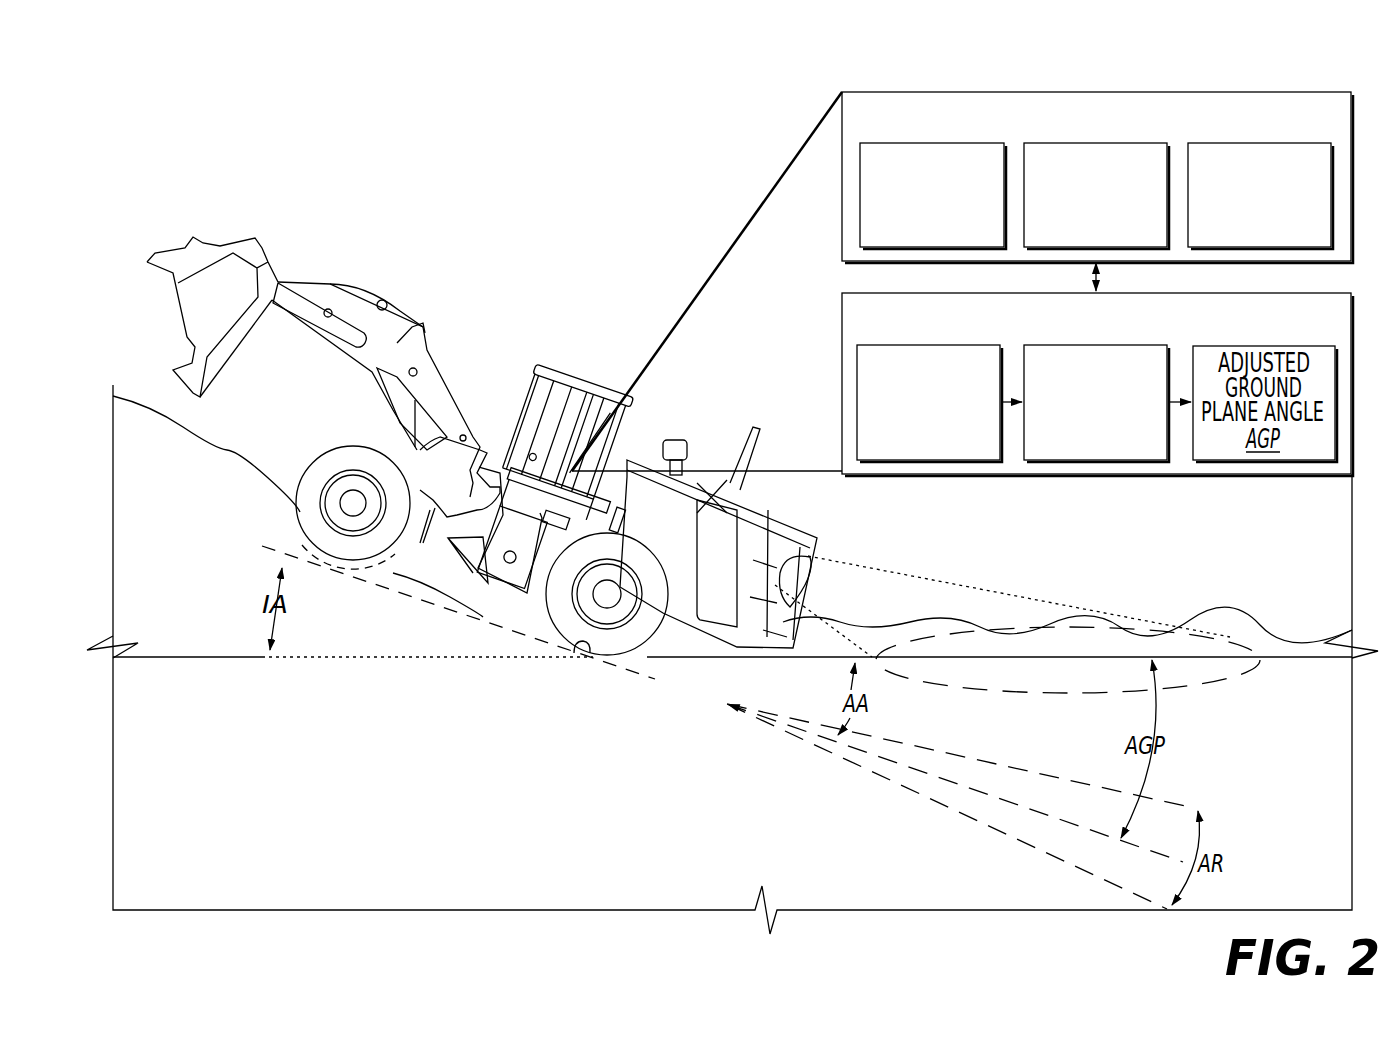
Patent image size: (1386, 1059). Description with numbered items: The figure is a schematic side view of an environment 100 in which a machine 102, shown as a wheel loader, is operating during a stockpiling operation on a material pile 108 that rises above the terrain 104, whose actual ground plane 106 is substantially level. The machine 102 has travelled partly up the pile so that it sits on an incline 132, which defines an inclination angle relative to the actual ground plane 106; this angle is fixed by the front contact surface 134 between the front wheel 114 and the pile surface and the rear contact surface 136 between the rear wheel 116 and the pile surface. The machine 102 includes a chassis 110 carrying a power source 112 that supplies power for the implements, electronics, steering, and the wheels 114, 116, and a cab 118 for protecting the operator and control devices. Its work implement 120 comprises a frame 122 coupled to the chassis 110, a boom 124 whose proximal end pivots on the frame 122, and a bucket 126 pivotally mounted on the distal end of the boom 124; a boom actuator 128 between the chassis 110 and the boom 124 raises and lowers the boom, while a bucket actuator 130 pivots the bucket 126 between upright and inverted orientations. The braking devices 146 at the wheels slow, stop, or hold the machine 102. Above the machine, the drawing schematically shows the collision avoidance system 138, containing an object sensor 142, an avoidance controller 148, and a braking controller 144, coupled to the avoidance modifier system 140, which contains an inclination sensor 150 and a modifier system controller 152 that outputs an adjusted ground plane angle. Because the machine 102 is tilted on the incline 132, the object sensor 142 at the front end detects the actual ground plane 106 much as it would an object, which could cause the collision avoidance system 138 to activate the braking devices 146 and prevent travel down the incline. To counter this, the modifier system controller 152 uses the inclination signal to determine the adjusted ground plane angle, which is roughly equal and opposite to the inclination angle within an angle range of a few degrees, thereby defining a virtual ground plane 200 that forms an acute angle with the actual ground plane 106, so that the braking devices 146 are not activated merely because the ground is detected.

The environment 100 is at (176, 140).
The machine 102 is at (597, 360).
The terrain 104 is at (1283, 638).
The actual ground plane 106 is at (1082, 625).
The material pile 108 is at (219, 523).
The chassis 110 is at (482, 600).
The power source 112 is at (713, 535).
The front wheel 114 is at (353, 450).
The rear wheel 116 is at (647, 623).
The cab 118 is at (640, 418).
The work implement 120 is at (357, 273).
The frame 122 is at (487, 495).
The boom 124 is at (397, 342).
The bucket 126 is at (206, 243).
The boom actuator 128 is at (377, 392).
The bucket actuator 130 is at (400, 290).
The incline 132 is at (183, 428).
The front contact surface 134 is at (337, 565).
The rear contact surface 136 is at (574, 653).
The collision avoidance system 138 is at (1254, 129).
The avoidance modifier system 140 is at (1251, 331).
The object sensor 142 is at (947, 232).
The braking controller 144 is at (1273, 232).
The braking device 146 is at (347, 494).
The avoidance controller 148 is at (1109, 232).
The inclination sensor 150 is at (942, 432).
The modifier system controller 152 is at (1109, 452).
The virtual ground plane 200 is at (950, 785).